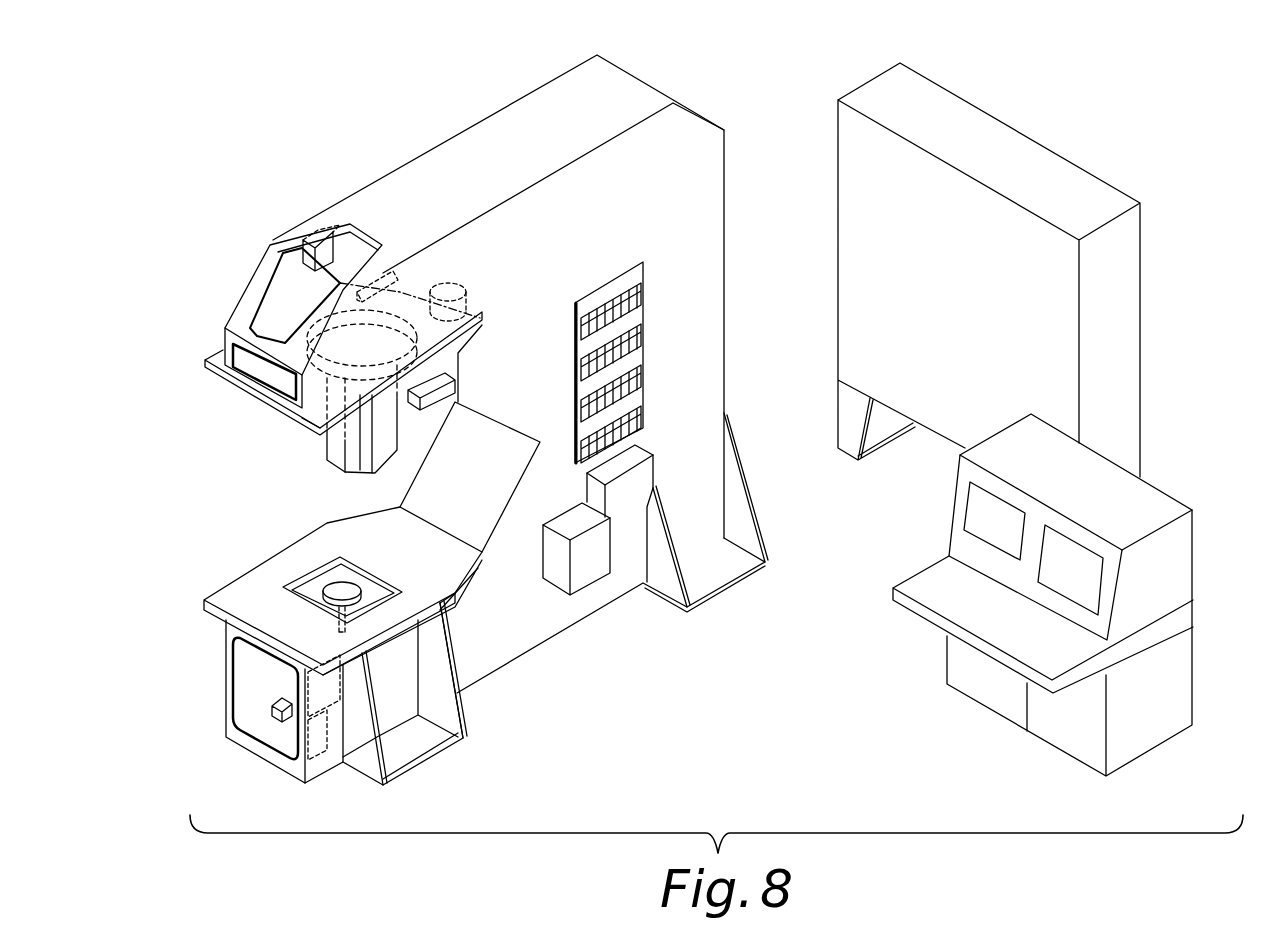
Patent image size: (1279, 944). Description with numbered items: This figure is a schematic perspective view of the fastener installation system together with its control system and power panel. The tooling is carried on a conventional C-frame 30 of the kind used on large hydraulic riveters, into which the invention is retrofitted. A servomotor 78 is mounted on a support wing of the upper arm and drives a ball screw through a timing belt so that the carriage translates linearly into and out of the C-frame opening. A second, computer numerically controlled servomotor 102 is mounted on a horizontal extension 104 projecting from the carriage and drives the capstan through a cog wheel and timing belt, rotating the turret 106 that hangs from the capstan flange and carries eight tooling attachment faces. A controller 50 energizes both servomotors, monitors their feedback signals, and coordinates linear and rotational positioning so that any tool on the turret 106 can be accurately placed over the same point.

The C-frame 30 is at (486, 420).
The controller 50 is at (1186, 572).
The servomotor 78 is at (436, 397).
The servomotor 102 is at (458, 292).
The horizontal extension 104 is at (417, 300).
The turret 106 is at (325, 452).